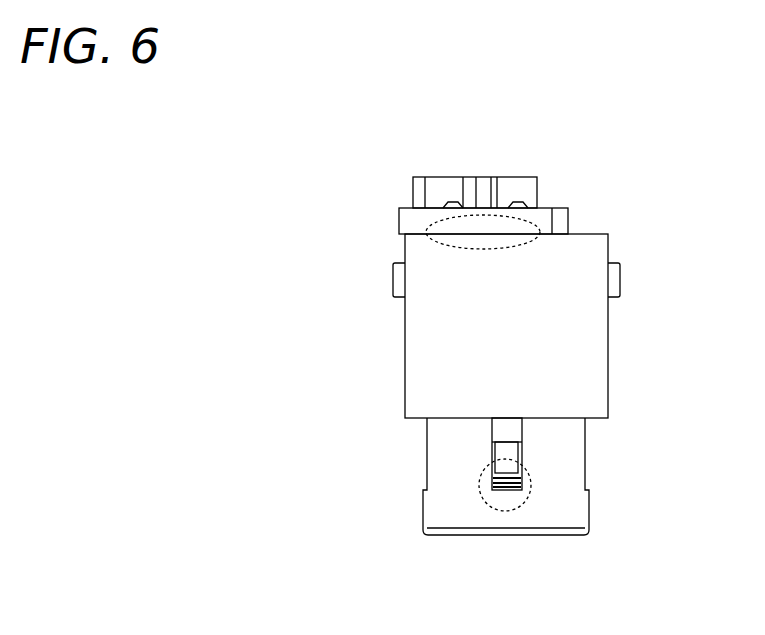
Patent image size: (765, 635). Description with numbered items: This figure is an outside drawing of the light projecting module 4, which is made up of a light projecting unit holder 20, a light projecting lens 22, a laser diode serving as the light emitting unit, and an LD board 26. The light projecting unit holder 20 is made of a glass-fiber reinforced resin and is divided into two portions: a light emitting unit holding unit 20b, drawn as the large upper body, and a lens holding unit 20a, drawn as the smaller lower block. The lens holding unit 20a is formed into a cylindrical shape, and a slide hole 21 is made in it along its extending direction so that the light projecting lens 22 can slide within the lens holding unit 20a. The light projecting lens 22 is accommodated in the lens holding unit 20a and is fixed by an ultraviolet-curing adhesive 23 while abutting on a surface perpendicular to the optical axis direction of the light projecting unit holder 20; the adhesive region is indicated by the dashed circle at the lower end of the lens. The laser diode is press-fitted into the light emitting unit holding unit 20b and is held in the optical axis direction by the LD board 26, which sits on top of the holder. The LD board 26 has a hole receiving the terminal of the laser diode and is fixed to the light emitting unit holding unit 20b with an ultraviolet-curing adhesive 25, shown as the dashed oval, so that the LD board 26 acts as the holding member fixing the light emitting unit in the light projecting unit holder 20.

The light projecting module 4 is at (623, 204).
The light projecting unit holder 20 is at (668, 342).
The lens holding unit 20a is at (563, 452).
The light emitting unit holding unit 20b is at (585, 362).
The slide hole 21 is at (495, 436).
The light projecting lens 22 is at (492, 446).
The ultraviolet-curing adhesive 23 is at (528, 505).
The ultraviolet-curing adhesive 25 is at (483, 249).
The LD board 26 is at (412, 222).